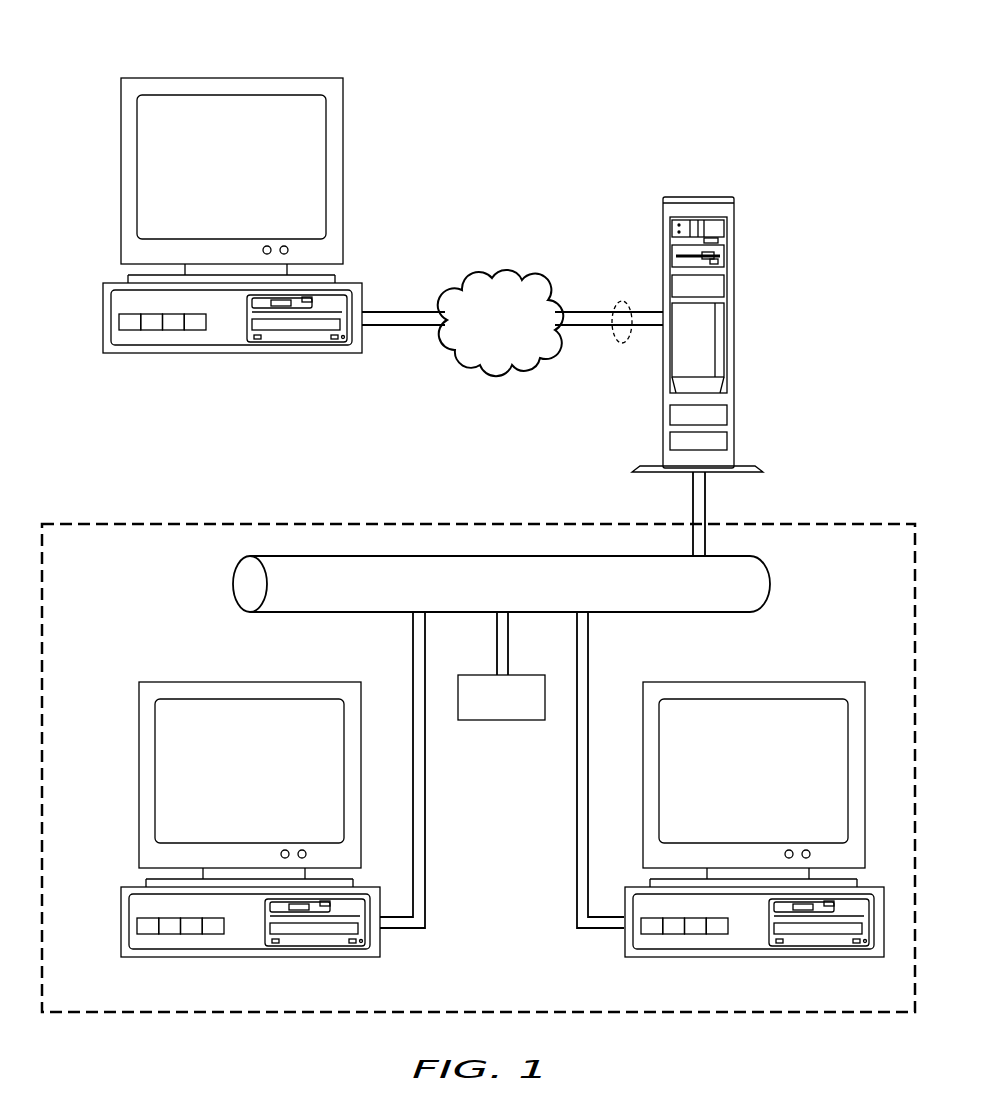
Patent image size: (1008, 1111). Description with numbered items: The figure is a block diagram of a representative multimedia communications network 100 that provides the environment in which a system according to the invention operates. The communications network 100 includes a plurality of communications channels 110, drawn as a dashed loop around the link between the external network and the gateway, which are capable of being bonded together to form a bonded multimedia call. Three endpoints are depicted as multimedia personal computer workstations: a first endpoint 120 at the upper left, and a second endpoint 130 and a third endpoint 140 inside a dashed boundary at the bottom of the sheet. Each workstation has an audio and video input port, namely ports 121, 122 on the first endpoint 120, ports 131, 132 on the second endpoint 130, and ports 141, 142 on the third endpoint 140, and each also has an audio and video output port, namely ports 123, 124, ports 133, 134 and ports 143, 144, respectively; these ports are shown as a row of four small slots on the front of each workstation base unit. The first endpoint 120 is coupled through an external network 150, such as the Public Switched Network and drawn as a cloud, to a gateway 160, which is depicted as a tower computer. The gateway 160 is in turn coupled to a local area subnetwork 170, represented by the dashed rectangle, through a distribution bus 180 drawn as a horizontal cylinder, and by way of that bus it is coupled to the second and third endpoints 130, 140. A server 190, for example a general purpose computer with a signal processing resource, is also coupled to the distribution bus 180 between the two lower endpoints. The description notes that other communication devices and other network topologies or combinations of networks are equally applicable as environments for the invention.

The communications network 100 is at (575, 63).
The communications channels 110 is at (623, 300).
The first endpoint 120 is at (251, 182).
The audio input port 121 is at (123, 322).
The video input port 122 is at (152, 331).
The audio output port 123 is at (175, 331).
The video output port 124 is at (203, 331).
The second endpoint 130 is at (269, 786).
The audio input port 131 is at (140, 925).
The video input port 132 is at (172, 934).
The audio output port 133 is at (192, 934).
The video output port 134 is at (220, 934).
The third endpoint 140 is at (773, 786).
The audio input port 141 is at (647, 929).
The video input port 142 is at (675, 934).
The audio output port 143 is at (698, 934).
The video output port 144 is at (725, 934).
The external network 150 is at (518, 333).
The gateway 160 is at (698, 197).
The local area subnetwork 170 is at (107, 575).
The distribution bus 180 is at (236, 582).
The server 190 is at (500, 722).